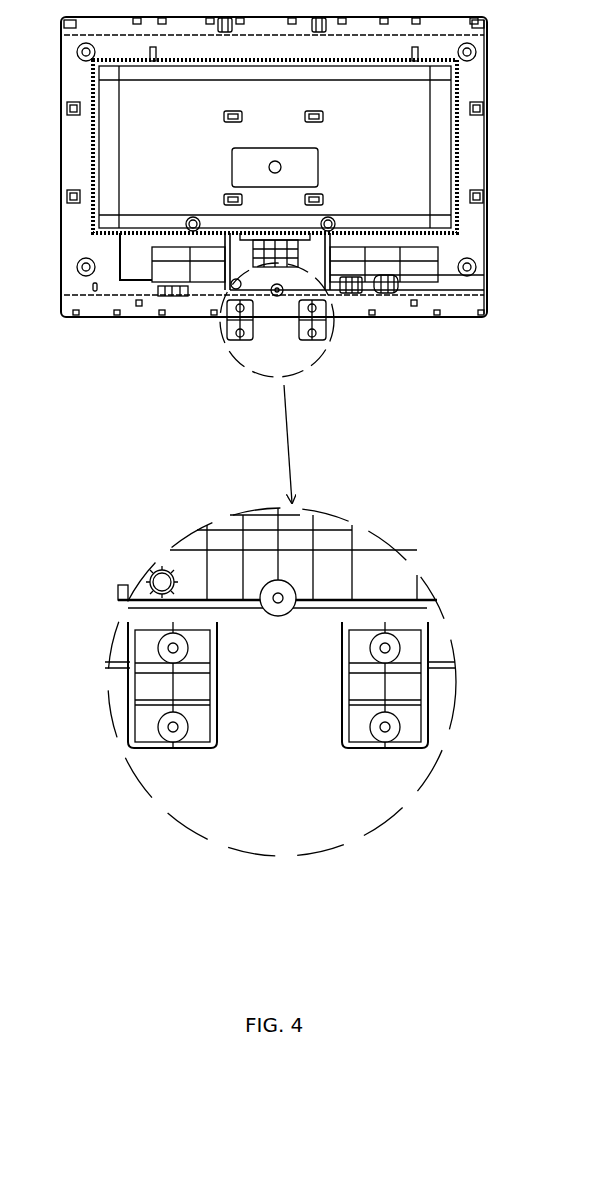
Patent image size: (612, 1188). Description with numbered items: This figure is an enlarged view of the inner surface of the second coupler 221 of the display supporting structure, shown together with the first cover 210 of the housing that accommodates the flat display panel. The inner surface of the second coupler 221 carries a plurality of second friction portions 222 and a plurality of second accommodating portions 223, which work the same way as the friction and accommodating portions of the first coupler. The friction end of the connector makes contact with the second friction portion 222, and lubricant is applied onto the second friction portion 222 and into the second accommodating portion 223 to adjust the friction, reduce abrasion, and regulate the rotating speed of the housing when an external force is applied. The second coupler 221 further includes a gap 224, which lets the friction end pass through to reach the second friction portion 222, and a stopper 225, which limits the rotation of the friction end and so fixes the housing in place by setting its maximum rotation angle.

The first cover 210 is at (491, 134).
The second coupler 221 is at (284, 721).
The second friction portion 222 is at (155, 702).
The second accommodating portion 223 is at (153, 688).
The gap 224 is at (285, 777).
The stopper 225 is at (288, 622).